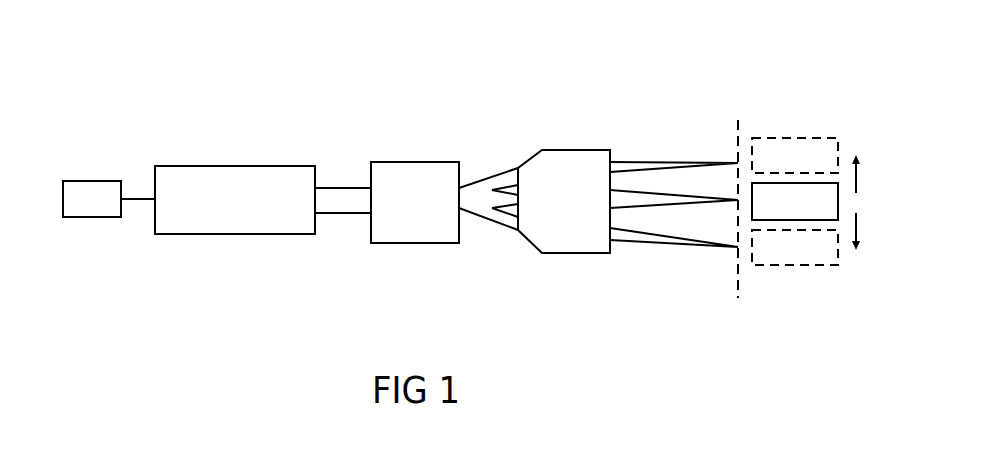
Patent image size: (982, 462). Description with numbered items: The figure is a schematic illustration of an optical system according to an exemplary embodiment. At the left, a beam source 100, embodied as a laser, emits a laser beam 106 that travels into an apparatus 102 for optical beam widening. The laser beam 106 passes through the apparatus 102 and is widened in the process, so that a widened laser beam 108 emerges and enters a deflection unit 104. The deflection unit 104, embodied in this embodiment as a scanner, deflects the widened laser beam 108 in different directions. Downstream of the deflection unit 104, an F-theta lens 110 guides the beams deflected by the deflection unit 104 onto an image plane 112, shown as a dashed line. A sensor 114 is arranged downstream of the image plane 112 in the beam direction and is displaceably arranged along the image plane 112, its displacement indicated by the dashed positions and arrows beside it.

The beam source 100 is at (83, 181).
The apparatus for optical beam widening 102 is at (220, 166).
The deflection unit 104 is at (395, 162).
The laser beam 106 is at (145, 200).
The widened laser beam 108 is at (353, 213).
The F-theta lens 110 is at (555, 149).
The image plane 112 is at (740, 115).
The sensor 114 is at (765, 183).